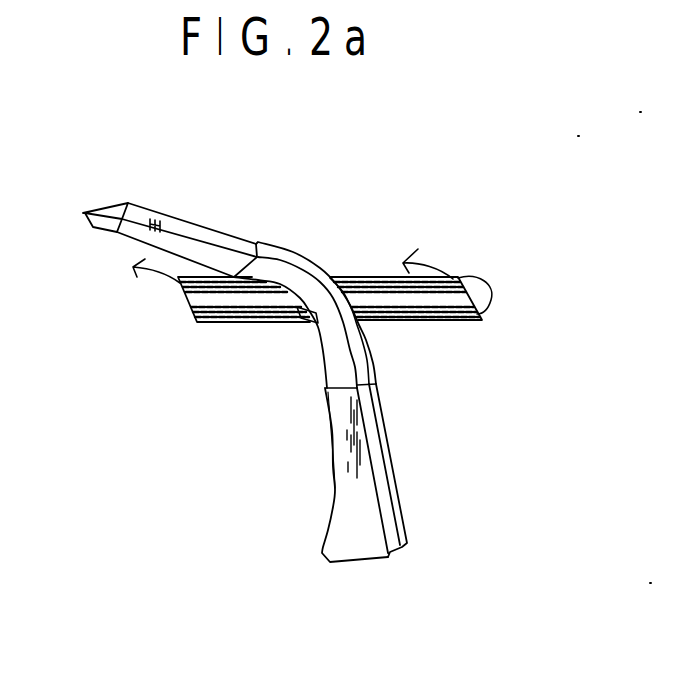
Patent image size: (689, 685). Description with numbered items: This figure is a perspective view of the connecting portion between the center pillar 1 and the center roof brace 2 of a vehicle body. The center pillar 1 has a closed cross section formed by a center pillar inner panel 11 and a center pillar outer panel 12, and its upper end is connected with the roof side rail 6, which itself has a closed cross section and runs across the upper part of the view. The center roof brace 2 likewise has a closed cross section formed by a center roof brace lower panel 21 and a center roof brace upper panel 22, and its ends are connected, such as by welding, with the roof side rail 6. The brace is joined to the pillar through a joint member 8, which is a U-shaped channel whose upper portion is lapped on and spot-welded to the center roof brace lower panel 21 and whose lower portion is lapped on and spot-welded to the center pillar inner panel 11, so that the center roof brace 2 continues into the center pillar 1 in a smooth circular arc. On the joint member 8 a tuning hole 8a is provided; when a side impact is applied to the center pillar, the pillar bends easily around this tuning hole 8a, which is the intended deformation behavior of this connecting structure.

The center pillar 1 is at (350, 471).
The center roof brace 2 is at (142, 230).
The center roof brace lower panel 21 is at (117, 232).
The center roof brace upper panel 22 is at (103, 204).
The roof side rail 6 is at (480, 292).
The joint member 8 is at (297, 285).
The tuning hole 8a is at (300, 318).
The center pillar inner panel 11 is at (357, 495).
The center pillar outer panel 12 is at (390, 440).